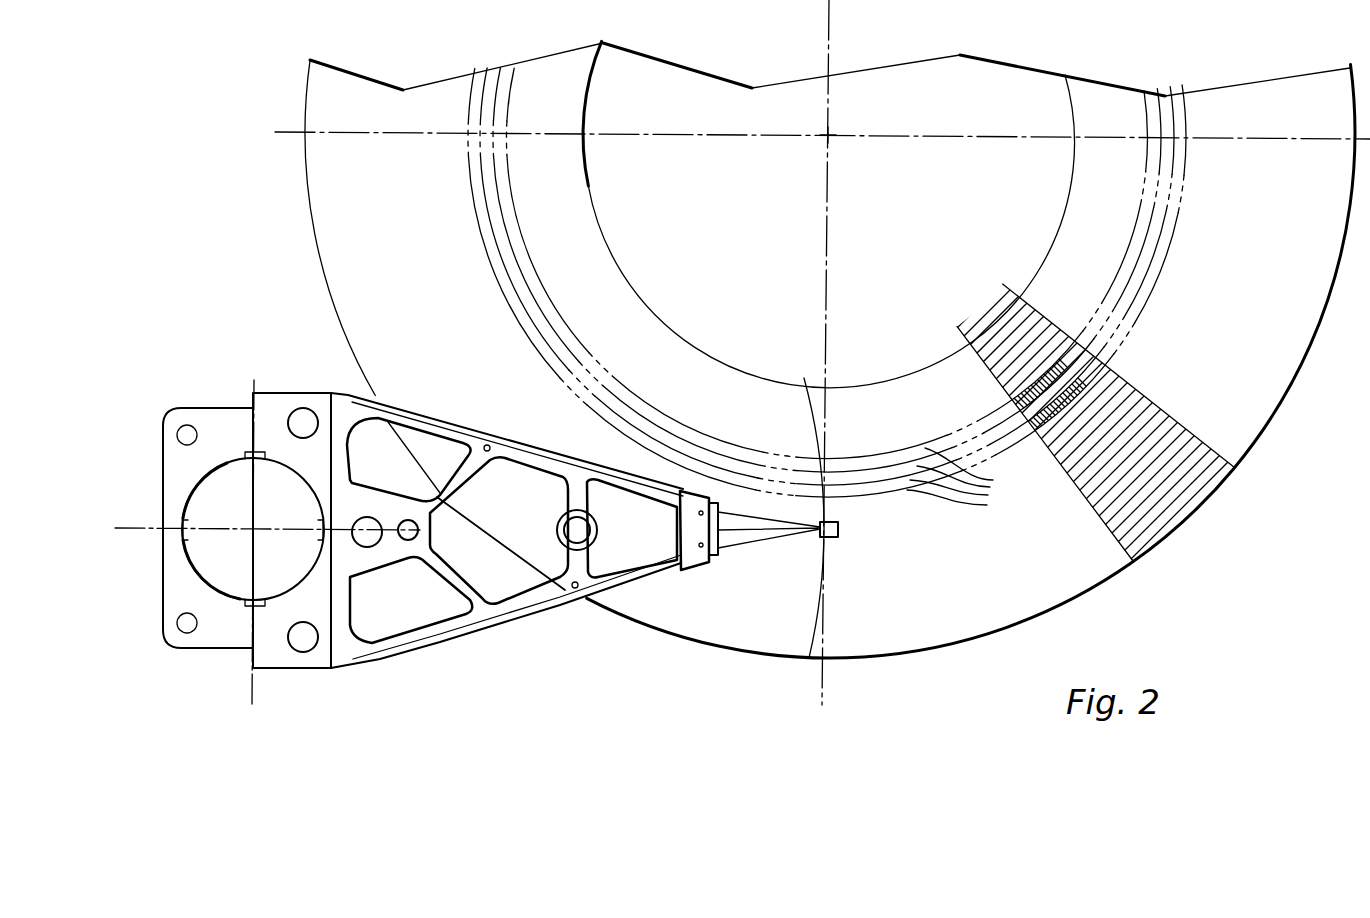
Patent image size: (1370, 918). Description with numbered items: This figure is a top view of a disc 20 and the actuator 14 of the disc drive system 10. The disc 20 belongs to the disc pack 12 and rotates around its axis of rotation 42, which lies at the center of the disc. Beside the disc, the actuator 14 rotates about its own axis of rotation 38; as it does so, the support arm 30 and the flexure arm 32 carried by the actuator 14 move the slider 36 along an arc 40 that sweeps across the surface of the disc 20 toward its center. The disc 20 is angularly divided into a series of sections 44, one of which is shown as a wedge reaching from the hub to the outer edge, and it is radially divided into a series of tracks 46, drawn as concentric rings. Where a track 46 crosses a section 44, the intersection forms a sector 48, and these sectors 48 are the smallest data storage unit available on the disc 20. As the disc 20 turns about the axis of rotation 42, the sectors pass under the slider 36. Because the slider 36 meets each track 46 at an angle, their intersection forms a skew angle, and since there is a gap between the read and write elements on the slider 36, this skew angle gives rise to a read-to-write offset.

The disc drive system 10 is at (188, 180).
The disc pack 12 is at (302, 256).
The actuator 14 is at (366, 668).
The disc 20 is at (1252, 367).
The support arm 30 is at (481, 428).
The flexure arm 32 is at (752, 555).
The slider 36 is at (838, 537).
The axis of rotation 38 is at (253, 529).
The arc 40 is at (815, 628).
The axis of rotation 42 is at (829, 142).
The section 44 is at (1215, 475).
The track 46 is at (827, 290).
The sector 48 is at (1032, 394).